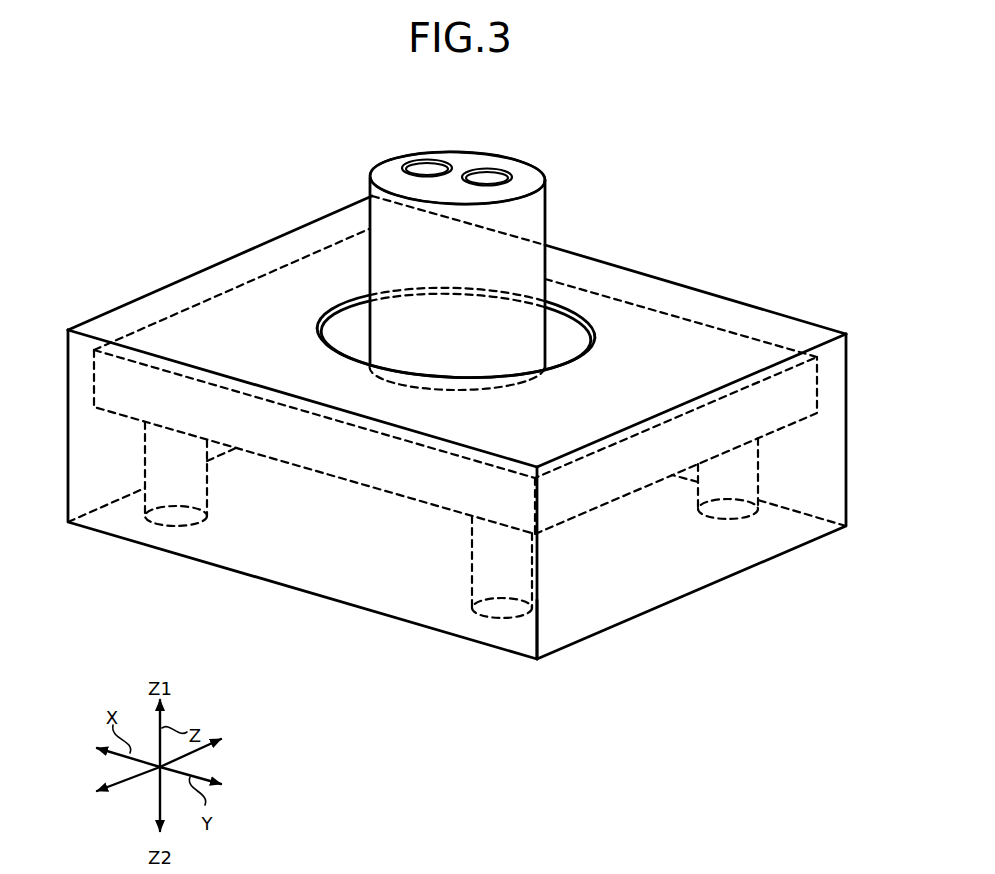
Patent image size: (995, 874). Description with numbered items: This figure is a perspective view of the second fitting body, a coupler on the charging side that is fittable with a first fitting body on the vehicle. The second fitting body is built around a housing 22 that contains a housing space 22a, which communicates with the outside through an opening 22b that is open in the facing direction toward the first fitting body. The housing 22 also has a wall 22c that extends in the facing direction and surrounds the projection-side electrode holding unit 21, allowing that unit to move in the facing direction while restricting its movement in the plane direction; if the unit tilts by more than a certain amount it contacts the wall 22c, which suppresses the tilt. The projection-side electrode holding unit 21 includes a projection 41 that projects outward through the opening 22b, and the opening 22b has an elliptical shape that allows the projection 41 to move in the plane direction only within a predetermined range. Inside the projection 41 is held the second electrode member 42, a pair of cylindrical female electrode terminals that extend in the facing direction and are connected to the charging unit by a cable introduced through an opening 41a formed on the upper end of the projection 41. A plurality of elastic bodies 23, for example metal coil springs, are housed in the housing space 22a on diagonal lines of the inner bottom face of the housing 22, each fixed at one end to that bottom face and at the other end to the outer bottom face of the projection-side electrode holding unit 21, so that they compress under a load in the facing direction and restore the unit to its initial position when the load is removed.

The projection-side electrode holding unit 21 is at (793, 348).
The housing 22 is at (768, 310).
The housing space 22a is at (569, 352).
The opening 22b is at (566, 306).
The wall 22c is at (562, 620).
The elastic body 23 is at (145, 455).
The projection 41 is at (370, 240).
The opening 41a is at (473, 172).
The second electrode member 42 is at (426, 163).